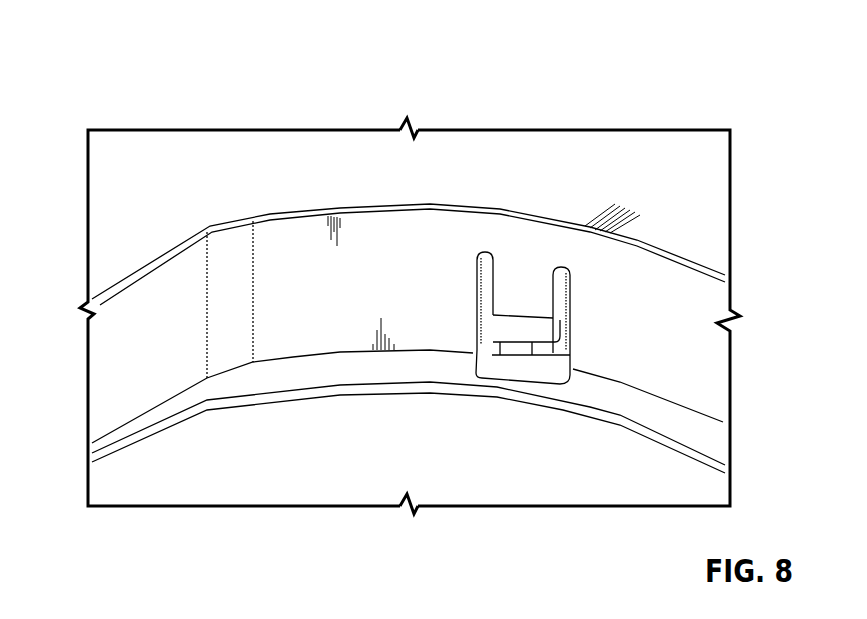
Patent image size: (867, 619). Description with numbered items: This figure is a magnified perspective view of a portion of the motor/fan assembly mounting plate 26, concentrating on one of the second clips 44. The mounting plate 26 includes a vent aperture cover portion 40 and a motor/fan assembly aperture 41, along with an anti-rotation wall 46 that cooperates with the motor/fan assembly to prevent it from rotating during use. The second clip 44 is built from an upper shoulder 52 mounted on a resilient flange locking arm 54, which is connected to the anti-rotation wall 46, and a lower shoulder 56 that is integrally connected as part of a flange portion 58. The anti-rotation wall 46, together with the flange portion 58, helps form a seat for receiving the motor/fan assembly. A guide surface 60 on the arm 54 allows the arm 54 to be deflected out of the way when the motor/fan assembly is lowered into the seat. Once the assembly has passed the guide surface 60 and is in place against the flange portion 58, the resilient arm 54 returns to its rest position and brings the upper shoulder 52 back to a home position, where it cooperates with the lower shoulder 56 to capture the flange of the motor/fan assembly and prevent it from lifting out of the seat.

The motor/fan assembly mounting plate 26 is at (130, 72).
The vent aperture cover portion 40 is at (128, 210).
The motor/fan assembly aperture 41 is at (590, 455).
The second clips 44 is at (617, 73).
The anti-rotation wall 46 is at (212, 228).
The upper shoulder 52 is at (547, 350).
The resilient flange locking arm 54 is at (533, 293).
The lower shoulder 56 is at (492, 380).
The flange portion 58 is at (293, 368).
The guide surface 60 is at (510, 330).